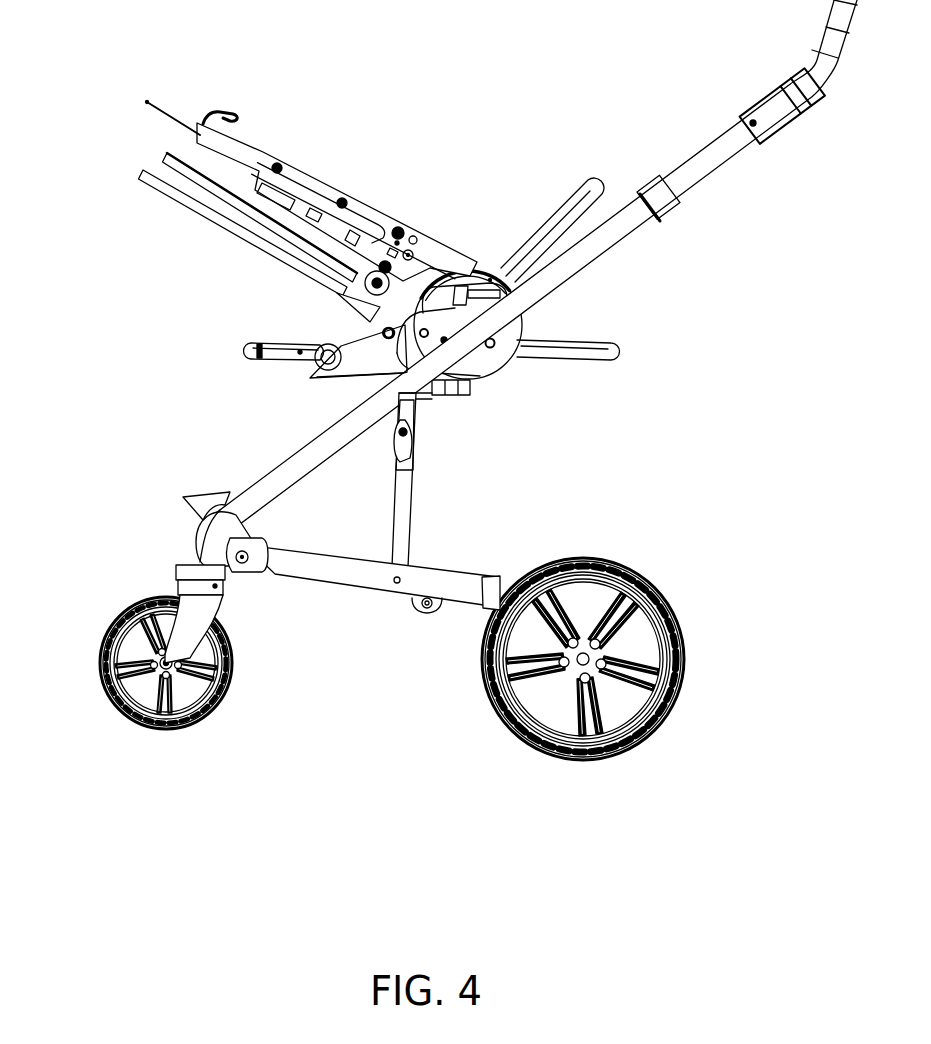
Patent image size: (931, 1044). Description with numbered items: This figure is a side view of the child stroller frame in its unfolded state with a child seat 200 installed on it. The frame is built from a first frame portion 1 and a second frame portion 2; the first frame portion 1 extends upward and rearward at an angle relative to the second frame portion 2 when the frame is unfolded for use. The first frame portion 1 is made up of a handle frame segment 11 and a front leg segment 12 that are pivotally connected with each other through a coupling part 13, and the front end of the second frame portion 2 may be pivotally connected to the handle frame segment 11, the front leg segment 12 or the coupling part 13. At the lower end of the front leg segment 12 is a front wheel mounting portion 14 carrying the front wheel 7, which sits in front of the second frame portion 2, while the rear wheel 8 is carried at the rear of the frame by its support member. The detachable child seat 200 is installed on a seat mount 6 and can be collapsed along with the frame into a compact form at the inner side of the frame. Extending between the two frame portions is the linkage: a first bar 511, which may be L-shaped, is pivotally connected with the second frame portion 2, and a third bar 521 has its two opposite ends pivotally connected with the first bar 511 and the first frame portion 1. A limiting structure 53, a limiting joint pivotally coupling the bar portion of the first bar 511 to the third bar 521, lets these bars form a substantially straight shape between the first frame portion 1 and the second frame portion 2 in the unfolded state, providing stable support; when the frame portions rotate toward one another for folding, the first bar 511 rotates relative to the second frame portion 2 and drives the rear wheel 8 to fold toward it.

The first frame portion 1 is at (536, 265).
The handle frame segment 11 is at (545, 285).
The front leg segment 12 is at (400, 398).
The coupling part 13 is at (447, 337).
The front wheel mounting portion 14 is at (197, 537).
The second frame portion 2 is at (318, 570).
The child seat 200 is at (325, 168).
The third bar 521 is at (417, 422).
The limiting structure 53 is at (422, 452).
The first bar 511 is at (410, 498).
The seat mount 6 is at (343, 322).
The front wheel 7 is at (162, 690).
The rear wheel 8 is at (610, 717).